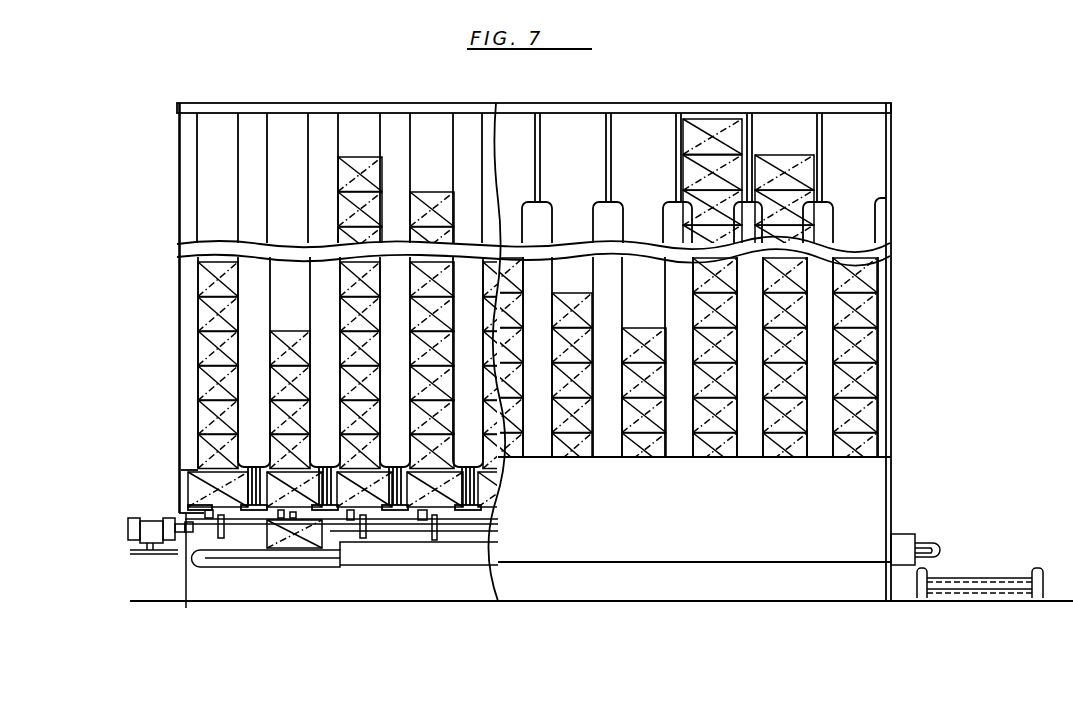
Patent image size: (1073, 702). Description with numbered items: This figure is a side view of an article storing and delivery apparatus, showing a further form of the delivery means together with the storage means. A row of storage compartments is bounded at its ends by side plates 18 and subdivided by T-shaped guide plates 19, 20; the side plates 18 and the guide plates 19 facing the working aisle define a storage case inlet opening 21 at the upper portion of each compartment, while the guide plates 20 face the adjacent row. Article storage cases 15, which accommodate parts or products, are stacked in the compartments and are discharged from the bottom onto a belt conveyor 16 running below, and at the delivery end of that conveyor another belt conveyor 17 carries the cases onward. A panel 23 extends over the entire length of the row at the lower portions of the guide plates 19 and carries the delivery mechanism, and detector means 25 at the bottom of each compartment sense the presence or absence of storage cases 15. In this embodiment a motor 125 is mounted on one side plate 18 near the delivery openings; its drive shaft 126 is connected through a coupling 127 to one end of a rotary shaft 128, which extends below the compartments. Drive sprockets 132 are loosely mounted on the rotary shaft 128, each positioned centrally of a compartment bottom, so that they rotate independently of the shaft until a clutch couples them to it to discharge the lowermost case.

The article storage case 15 is at (429, 195).
The belt conveyor 16 is at (207, 565).
The belt conveyor 17 is at (985, 578).
The side plate 18 is at (181, 164).
The guide plate 19 is at (550, 201).
The guide plate 20 is at (246, 165).
The storage case inlet opening 21 is at (565, 120).
The panel 23 is at (893, 497).
The detector means 25 is at (203, 513).
The motor 125 is at (128, 534).
The drive shaft 126 is at (176, 554).
The coupling 127 is at (183, 573).
The rotary shaft 128 is at (492, 516).
The drive sprocket 132 is at (222, 540).